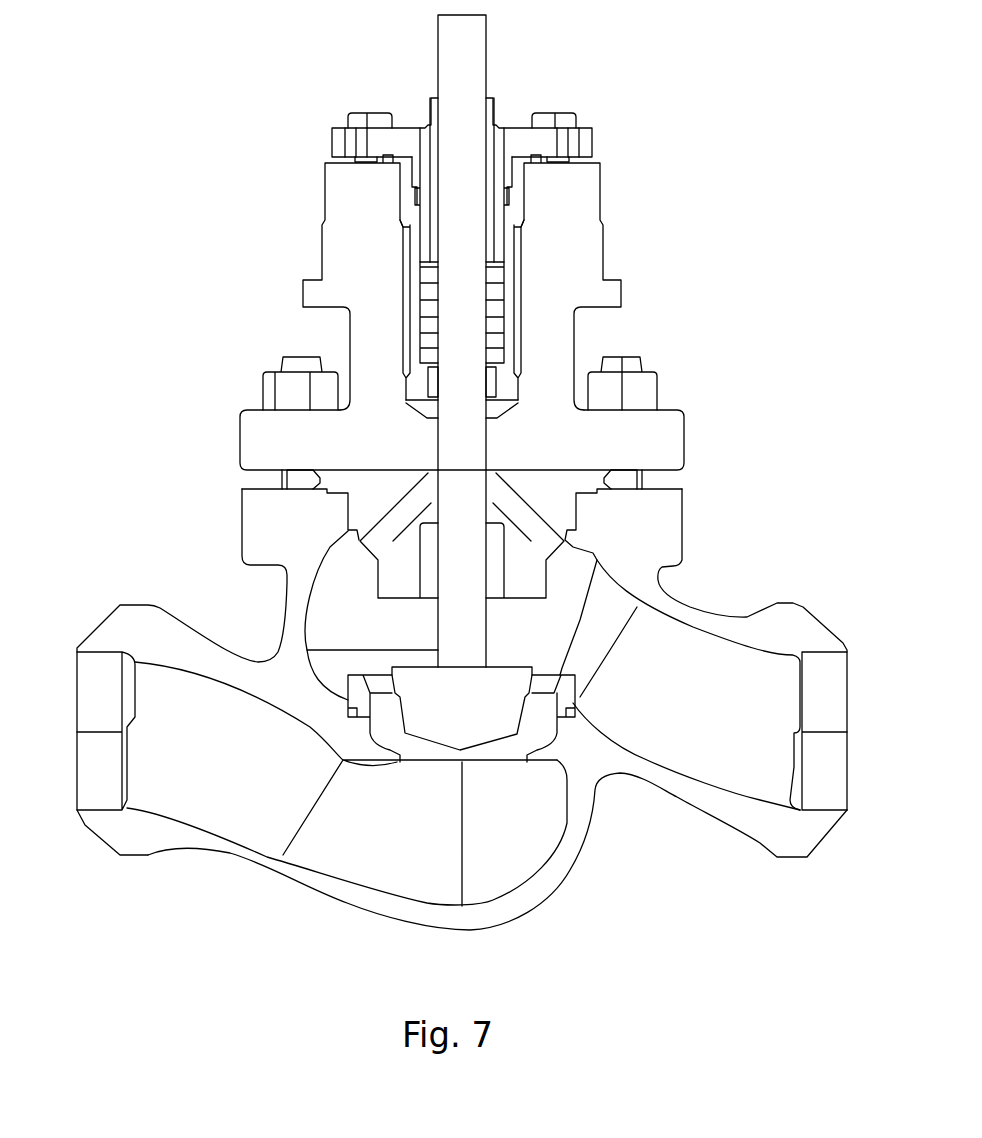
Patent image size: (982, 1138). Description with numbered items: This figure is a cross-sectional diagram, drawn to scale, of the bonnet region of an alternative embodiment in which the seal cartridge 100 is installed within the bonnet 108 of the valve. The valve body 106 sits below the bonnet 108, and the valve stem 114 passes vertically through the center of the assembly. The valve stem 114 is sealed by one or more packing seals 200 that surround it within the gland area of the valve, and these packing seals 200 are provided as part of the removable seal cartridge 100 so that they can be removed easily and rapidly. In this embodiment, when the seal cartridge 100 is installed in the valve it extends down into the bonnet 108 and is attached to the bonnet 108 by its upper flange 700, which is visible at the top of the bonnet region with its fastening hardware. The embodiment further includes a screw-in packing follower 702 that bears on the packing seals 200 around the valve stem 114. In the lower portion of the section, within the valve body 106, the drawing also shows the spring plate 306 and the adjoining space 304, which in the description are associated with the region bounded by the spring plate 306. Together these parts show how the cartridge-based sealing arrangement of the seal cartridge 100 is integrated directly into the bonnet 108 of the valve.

The seal cartridge 100 is at (706, 132).
The valve body 106 is at (682, 527).
The bonnet 108 is at (684, 437).
The valve stem 114 is at (487, 30).
The packing seals 200 is at (505, 290).
The space 304 is at (540, 750).
The spring plate 306 is at (477, 720).
The upper flange 700 is at (592, 137).
The packing follower 702 is at (500, 128).